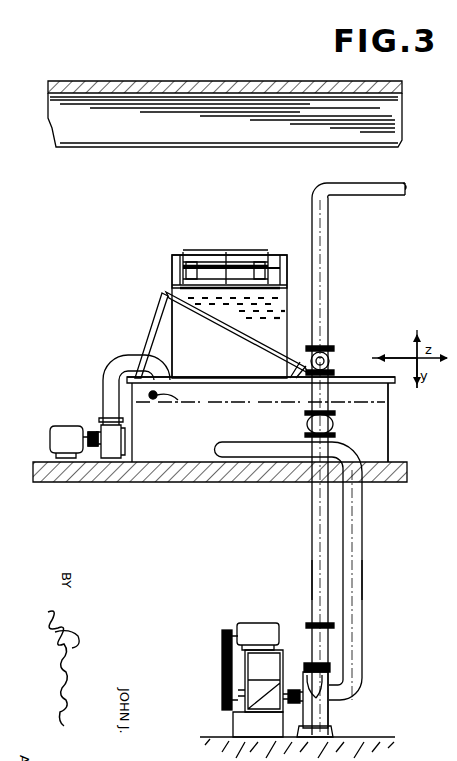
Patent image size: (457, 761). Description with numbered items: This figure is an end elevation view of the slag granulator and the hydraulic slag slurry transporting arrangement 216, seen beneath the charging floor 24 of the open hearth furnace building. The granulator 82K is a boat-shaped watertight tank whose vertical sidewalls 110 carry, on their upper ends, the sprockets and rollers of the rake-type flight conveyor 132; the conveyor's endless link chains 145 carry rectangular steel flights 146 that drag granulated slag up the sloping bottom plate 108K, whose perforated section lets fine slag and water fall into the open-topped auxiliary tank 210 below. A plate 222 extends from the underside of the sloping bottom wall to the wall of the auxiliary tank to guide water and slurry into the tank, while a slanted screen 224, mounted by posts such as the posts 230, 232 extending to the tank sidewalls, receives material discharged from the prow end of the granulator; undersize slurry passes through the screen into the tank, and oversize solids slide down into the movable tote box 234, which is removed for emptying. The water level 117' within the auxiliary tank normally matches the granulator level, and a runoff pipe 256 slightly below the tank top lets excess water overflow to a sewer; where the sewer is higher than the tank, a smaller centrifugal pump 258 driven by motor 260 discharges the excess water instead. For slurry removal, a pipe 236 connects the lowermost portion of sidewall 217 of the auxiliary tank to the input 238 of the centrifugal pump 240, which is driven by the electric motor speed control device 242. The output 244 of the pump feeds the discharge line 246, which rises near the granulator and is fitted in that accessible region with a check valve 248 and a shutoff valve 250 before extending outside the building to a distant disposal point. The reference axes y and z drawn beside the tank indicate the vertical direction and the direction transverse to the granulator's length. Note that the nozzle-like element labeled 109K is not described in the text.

The charging floor 24 is at (197, 80).
The endless link chains 145 is at (192, 268).
The rake-type flight conveyor 132 is at (244, 232).
The discharge line 246 is at (322, 230).
The slag granulator 82K is at (168, 268).
The flights 146 is at (282, 270).
The sidewalls 110 is at (170, 288).
The post 230 is at (160, 318).
The nozzle 109K is at (285, 312).
The sloping bottom plate 108K is at (276, 320).
The plate 222 is at (208, 352).
The slanted screen 224 is at (240, 329).
The post 232 is at (292, 366).
The shutoff valve 250 is at (329, 362).
The water level 117' is at (261, 368).
The motor 260 is at (72, 428).
The runoff pipe 256 is at (164, 400).
The sidewall 217 is at (242, 431).
The check valve 248 is at (332, 425).
The tote box 234 is at (392, 432).
The centrifugal pump 258 is at (108, 462).
The auxiliary tank 210 is at (176, 478).
The pipe 236 is at (345, 496).
The hydraulic granulated slag slurry transporting arrangement 216 is at (300, 548).
The electric motor speed control device 242 is at (276, 640).
The output 244 is at (325, 665).
The centrifugal pump 240 is at (318, 692).
The input 238 is at (333, 728).